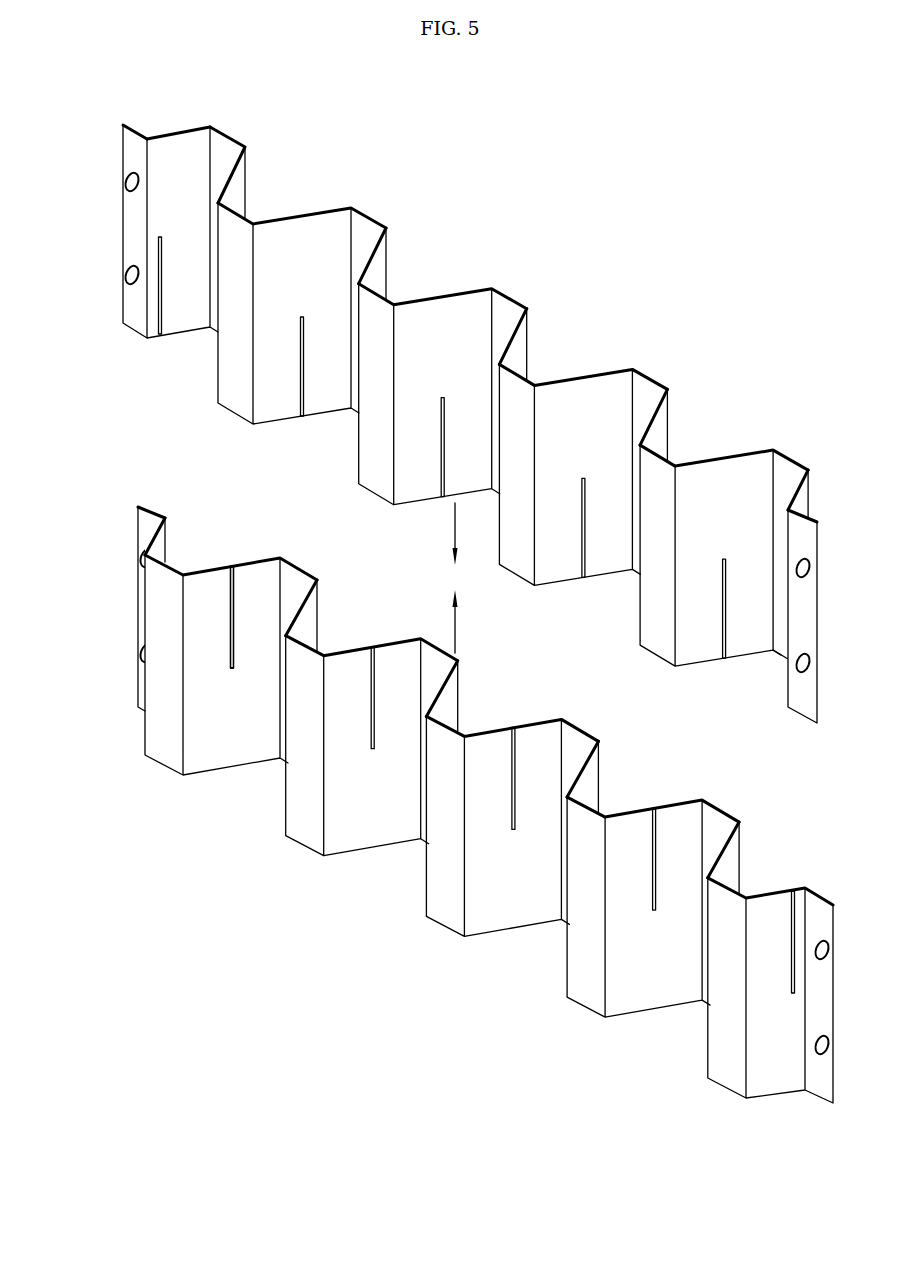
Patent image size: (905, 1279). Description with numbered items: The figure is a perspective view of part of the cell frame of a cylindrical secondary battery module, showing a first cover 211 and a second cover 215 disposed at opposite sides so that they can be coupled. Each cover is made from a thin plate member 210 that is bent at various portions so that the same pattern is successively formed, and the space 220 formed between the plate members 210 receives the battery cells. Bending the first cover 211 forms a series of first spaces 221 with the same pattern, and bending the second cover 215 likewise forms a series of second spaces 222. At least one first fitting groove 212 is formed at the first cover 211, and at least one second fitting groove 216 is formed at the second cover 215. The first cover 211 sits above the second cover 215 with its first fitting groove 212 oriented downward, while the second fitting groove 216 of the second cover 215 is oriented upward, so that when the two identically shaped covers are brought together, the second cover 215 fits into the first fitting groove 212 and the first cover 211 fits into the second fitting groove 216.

The plate member 210 is at (440, 400).
The first cover 211 is at (178, 131).
The first fitting groove 212 is at (160, 338).
The second cover 215 is at (151, 506).
The second fitting groove 216 is at (236, 560).
The space 220 is at (485, 635).
The first space 221 is at (204, 161).
The second space 222 is at (203, 550).